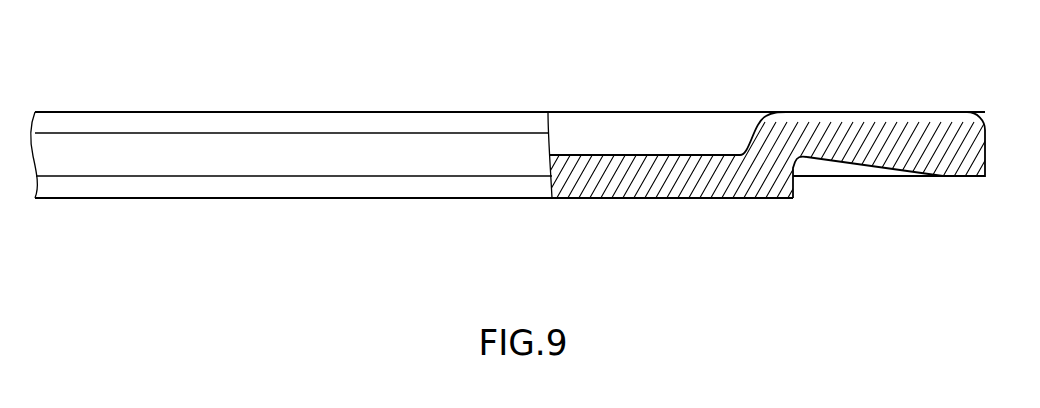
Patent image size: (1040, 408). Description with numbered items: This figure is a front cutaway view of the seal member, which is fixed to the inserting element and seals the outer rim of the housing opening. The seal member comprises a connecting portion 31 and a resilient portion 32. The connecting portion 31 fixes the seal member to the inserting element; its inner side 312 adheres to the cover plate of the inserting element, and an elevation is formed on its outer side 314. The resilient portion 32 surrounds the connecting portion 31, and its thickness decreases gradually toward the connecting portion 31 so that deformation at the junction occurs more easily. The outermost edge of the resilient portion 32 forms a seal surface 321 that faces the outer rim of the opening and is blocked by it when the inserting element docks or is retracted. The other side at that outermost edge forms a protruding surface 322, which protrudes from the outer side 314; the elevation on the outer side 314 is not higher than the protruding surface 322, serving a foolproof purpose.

The connecting portion 31 is at (633, 179).
The inner side 312 is at (695, 200).
The outer side 314 is at (642, 153).
The resilient portion 32 is at (906, 132).
The seal surface 321 is at (970, 179).
The protruding surface 322 is at (844, 110).